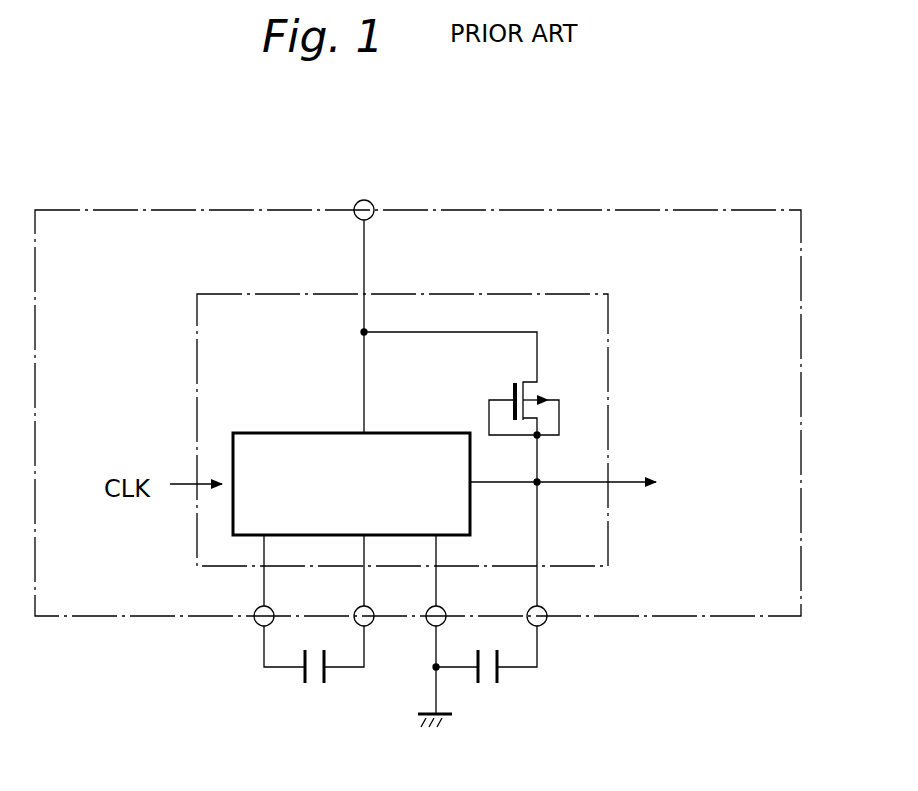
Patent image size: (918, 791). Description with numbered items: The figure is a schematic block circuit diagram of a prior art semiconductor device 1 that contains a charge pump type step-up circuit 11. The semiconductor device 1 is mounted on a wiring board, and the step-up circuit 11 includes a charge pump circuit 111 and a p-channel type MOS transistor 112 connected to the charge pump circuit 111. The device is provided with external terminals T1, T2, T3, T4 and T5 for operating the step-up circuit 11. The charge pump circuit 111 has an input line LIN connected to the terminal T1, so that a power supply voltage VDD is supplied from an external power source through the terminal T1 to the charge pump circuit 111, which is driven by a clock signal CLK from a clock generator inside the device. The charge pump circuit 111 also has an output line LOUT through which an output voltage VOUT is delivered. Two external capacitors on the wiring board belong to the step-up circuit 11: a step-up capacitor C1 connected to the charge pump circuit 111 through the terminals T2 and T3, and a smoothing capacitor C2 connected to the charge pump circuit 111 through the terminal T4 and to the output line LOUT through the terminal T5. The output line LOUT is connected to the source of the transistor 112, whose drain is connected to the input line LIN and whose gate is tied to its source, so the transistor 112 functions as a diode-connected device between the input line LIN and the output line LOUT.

The semiconductor device 1 is at (589, 200).
The charge pump type step-up circuit 11 is at (186, 368).
The charge pump circuit 111 is at (280, 432).
The p-channel type MOS transistor 112 is at (474, 396).
The external terminal T1 is at (374, 206).
The external terminal T2 is at (258, 626).
The external terminal T3 is at (357, 610).
The external terminal T4 is at (444, 608).
The external terminal T5 is at (545, 623).
The step-up capacitor C1 is at (300, 672).
The smoothing capacitor C2 is at (500, 676).
The input line LIN is at (367, 250).
The output line LOUT is at (625, 484).